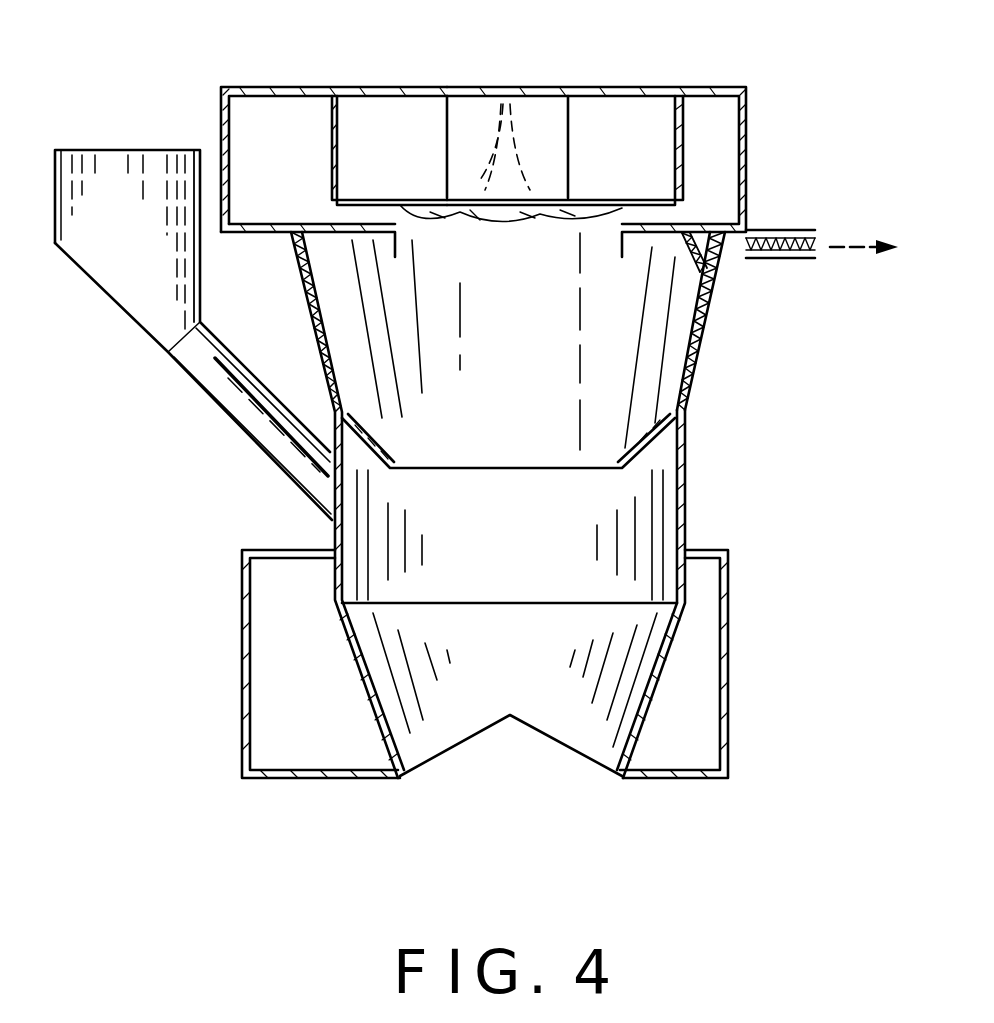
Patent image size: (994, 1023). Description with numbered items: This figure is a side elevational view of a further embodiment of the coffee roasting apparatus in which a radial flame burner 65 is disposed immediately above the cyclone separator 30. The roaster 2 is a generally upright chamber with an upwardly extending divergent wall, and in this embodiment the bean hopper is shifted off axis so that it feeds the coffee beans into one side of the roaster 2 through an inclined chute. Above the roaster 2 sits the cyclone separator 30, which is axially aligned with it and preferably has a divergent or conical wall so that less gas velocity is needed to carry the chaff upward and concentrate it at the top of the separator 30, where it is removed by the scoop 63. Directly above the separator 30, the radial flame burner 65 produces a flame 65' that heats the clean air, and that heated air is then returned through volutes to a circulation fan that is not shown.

The roaster 2 is at (696, 517).
The cyclone separator 30 is at (698, 380).
The scoop 63 is at (683, 254).
The radial flame burner 65 is at (529, 99).
The flame 65' is at (511, 216).